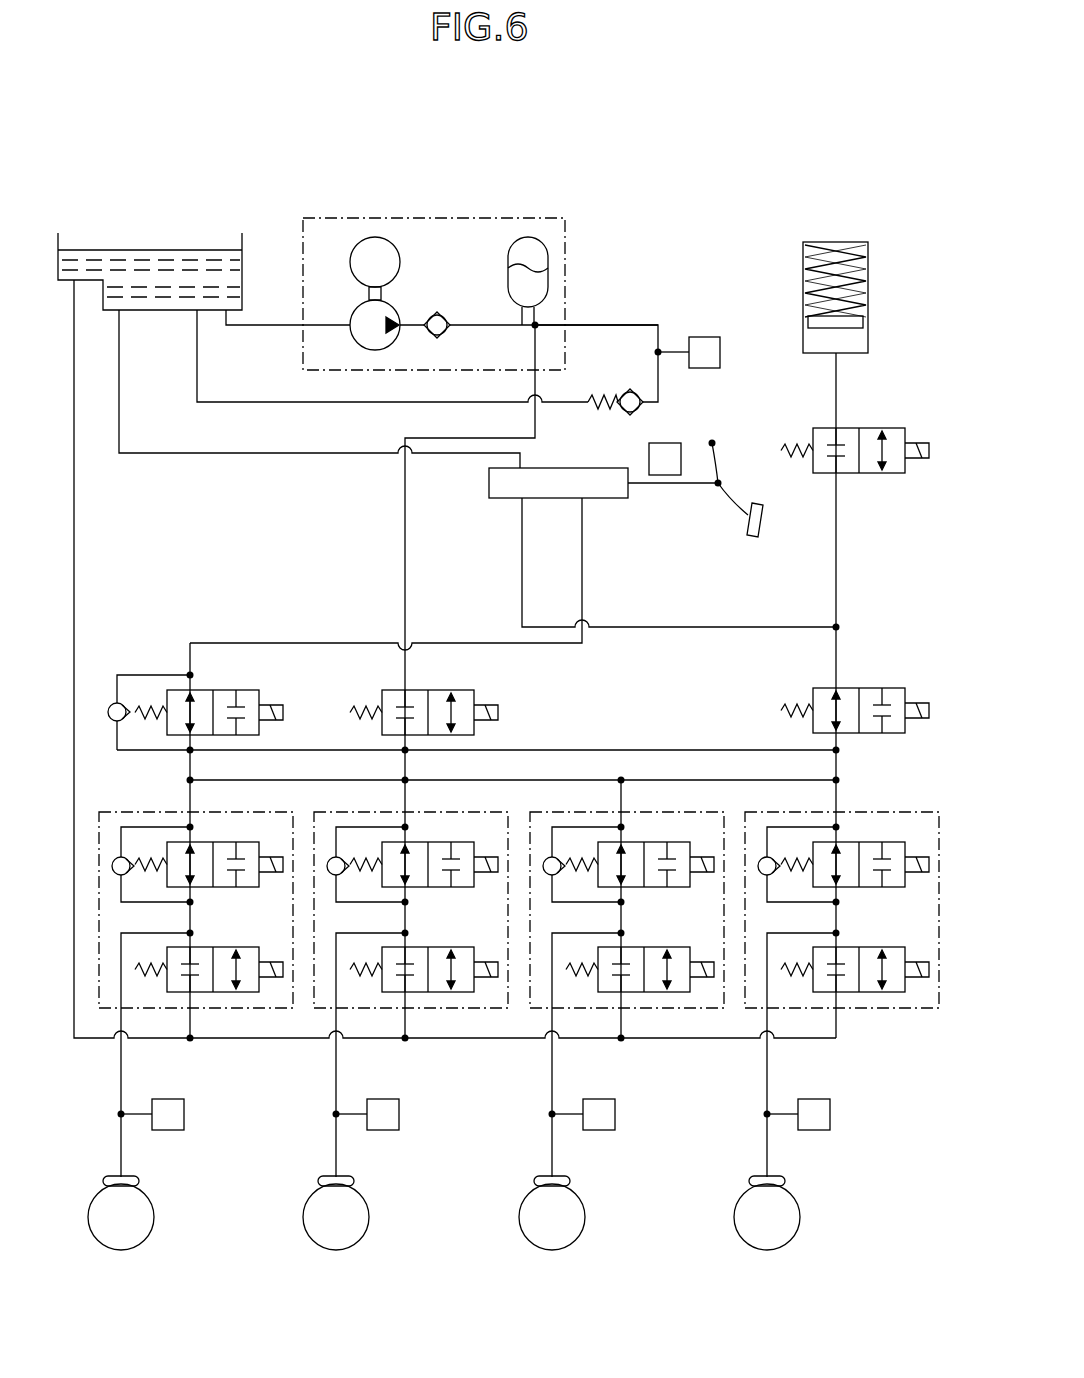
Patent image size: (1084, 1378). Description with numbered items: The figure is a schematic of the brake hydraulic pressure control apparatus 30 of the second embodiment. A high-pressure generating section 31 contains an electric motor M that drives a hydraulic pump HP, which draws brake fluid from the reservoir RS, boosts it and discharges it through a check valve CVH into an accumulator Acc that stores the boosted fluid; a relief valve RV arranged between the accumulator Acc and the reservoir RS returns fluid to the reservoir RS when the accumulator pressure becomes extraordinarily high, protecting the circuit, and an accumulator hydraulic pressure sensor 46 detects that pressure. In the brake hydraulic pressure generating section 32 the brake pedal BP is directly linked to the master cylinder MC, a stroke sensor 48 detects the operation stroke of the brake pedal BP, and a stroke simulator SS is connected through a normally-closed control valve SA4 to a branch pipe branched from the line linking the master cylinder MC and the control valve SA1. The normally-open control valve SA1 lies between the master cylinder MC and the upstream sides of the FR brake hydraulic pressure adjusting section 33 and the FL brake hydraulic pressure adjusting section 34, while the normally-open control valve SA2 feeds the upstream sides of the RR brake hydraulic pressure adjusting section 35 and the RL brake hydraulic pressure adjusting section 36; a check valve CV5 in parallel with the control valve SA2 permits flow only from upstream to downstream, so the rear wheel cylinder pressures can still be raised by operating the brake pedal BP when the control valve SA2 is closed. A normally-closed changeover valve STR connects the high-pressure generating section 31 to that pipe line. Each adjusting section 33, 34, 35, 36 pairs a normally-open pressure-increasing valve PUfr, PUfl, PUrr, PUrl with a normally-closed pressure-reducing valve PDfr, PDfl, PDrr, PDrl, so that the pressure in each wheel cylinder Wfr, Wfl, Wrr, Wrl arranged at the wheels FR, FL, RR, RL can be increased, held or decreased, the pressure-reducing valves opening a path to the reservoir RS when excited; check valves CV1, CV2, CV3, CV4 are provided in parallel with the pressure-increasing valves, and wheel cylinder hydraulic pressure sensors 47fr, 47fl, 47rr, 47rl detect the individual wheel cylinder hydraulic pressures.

The reservoir RS is at (245, 268).
The high-pressure generating section 31 is at (568, 222).
The electric motor M is at (375, 268).
The hydraulic pump HP is at (393, 342).
The check valve CVH is at (438, 314).
The accumulator Acc is at (522, 238).
The relief valve RV is at (598, 392).
The brake hydraulic pressure control apparatus 30 is at (660, 290).
The accumulator hydraulic pressure sensor 46 is at (722, 352).
The stroke sensor 48 is at (675, 442).
The brake hydraulic pressure generating section 32 is at (740, 412).
The stroke simulator SS is at (848, 244).
The control valve SA4 is at (858, 430).
The master cylinder MC is at (489, 483).
The brake pedal BP is at (748, 520).
The check valve CV5 is at (112, 704).
The control valve SA2 is at (208, 692).
The changeover valve STR is at (425, 692).
The control valve SA1 is at (830, 688).
The RL brake hydraulic pressure adjusting section 36 is at (104, 812).
The RR brake hydraulic pressure adjusting section 35 is at (319, 812).
The FL brake hydraulic pressure adjusting section 34 is at (535, 812).
The FR brake hydraulic pressure adjusting section 33 is at (750, 812).
The pressure-increasing valve PUrl is at (205, 842).
The pressure-increasing valve PUrr is at (420, 842).
The pressure-increasing valve PUfl is at (636, 842).
The pressure-increasing valve PUfr is at (851, 842).
The pressure-reducing valve PDrl is at (205, 947).
The pressure-reducing valve PDrr is at (420, 947).
The pressure-reducing valve PDfl is at (636, 947).
The pressure-reducing valve PDfr is at (851, 947).
The check valve CV4 is at (116, 875).
The check valve CV3 is at (331, 875).
The check valve CV2 is at (547, 875).
The check valve CV1 is at (762, 875).
The wheel cylinder hydraulic pressure sensor 47rl is at (185, 1114).
The wheel cylinder hydraulic pressure sensor 47rr is at (400, 1114).
The wheel cylinder hydraulic pressure sensor 47fl is at (616, 1114).
The wheel cylinder hydraulic pressure sensor 47fr is at (831, 1114).
The wheel cylinder Wrl is at (140, 1178).
The wheel cylinder Wrr is at (355, 1178).
The wheel cylinder Wfl is at (570, 1178).
The wheel cylinder Wfr is at (785, 1178).
The rear-left wheel RL is at (121, 1217).
The rear-right wheel RR is at (336, 1217).
The front-left wheel FL is at (552, 1217).
The front-right wheel FR is at (767, 1217).